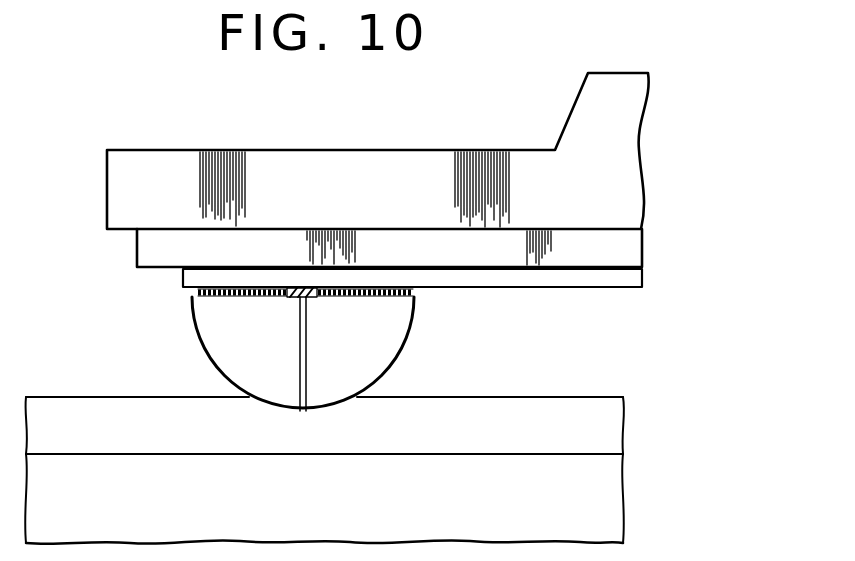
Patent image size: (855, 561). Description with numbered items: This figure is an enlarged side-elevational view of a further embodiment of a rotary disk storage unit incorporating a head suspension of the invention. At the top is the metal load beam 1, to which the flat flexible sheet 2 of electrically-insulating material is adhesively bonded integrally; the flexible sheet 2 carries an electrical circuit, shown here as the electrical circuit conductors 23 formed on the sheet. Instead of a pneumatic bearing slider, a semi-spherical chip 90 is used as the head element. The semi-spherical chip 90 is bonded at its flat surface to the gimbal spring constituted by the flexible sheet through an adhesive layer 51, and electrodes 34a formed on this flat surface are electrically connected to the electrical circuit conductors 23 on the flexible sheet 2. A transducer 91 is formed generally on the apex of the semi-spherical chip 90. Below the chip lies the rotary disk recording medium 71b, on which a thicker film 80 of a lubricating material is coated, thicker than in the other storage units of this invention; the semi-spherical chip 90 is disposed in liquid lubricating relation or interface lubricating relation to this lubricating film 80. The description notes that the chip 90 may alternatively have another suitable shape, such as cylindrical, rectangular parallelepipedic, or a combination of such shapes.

The load beam 1 is at (645, 137).
The flexible sheet 2 is at (646, 239).
The electrical circuit conductors 23 is at (634, 273).
The adhesive layer 51 is at (192, 291).
The electrodes 34a is at (290, 299).
The semi-spherical chip 90 is at (416, 327).
The transducer 91 is at (303, 413).
The lubricating film 80 is at (606, 426).
The rotary disk recording medium 71b is at (628, 503).